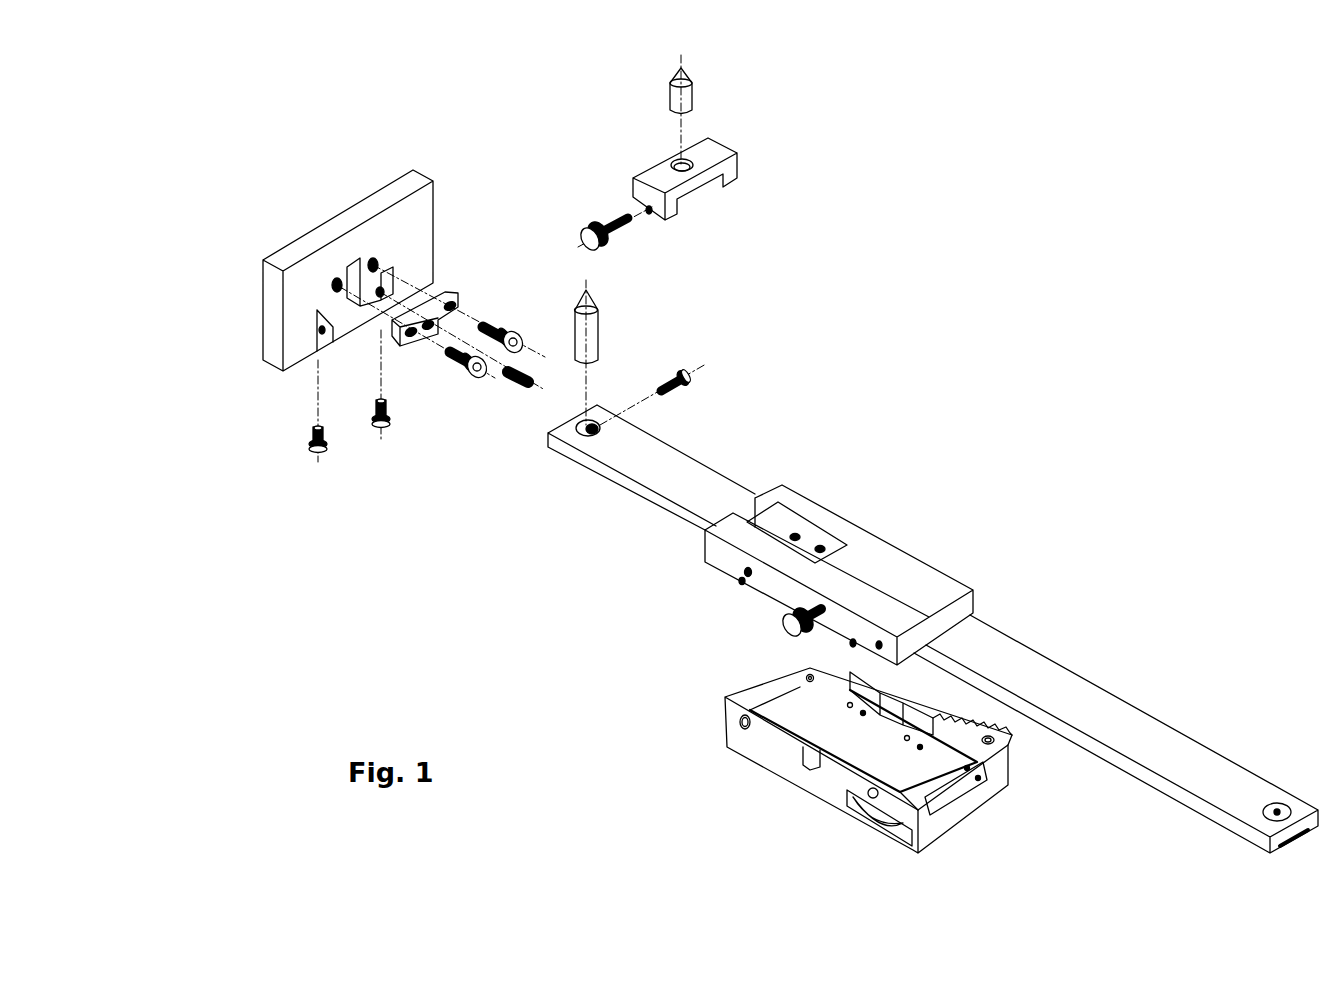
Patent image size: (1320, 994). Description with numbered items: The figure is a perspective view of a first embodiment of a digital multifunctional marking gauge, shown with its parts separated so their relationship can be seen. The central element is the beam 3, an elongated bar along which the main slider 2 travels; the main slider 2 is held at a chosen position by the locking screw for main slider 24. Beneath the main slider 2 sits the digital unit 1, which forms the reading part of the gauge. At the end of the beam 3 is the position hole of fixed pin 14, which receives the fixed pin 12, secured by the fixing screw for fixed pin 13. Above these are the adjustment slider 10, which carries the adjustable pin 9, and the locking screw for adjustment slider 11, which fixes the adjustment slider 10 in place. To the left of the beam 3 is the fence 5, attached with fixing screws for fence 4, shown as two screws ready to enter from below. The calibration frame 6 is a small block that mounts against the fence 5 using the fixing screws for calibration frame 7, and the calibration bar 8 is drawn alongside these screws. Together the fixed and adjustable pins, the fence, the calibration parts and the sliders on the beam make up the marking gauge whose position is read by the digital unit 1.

The digital unit 1 is at (735, 738).
The main slider 2 is at (725, 553).
The beam 3 is at (809, 625).
The fixing screw for fence 4 is at (377, 403).
The fence 5 is at (273, 450).
The calibration frame 6 is at (444, 290).
The fixing screw for calibration frame 7 is at (468, 355).
The calibration bar 8 is at (528, 372).
The adjustable pin 9 is at (687, 97).
The adjustment slider 10 is at (722, 157).
The locking screw for adjustment slider 11 is at (600, 245).
The fixed pin 12 is at (593, 323).
The fixing screw for fixed pin 13 is at (700, 378).
The position hole of fixed pin 14 is at (600, 428).
The locking screw for main slider 24 is at (786, 625).